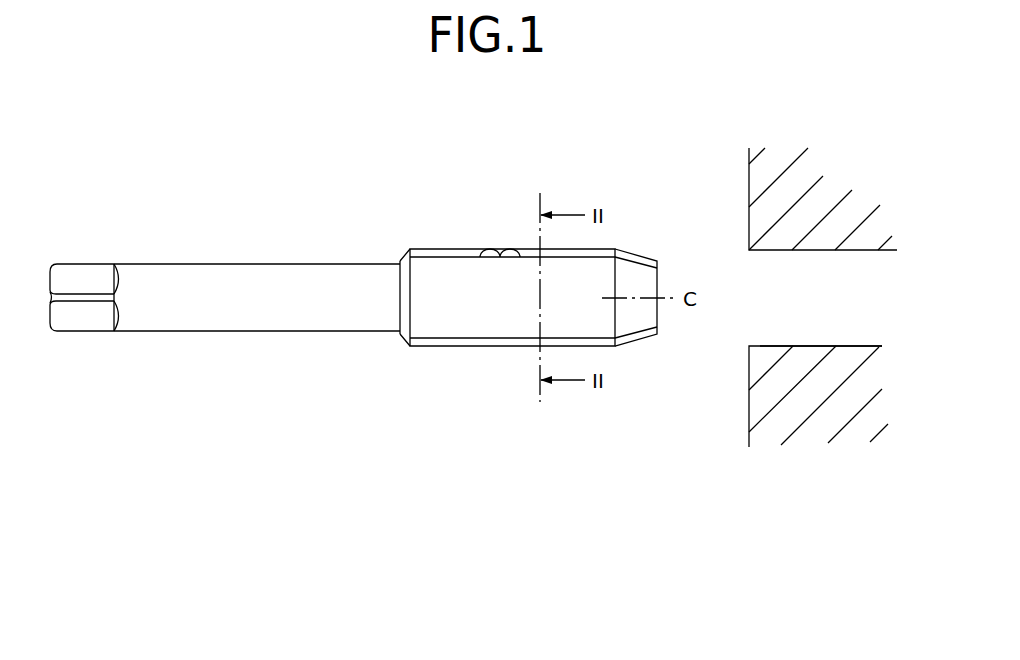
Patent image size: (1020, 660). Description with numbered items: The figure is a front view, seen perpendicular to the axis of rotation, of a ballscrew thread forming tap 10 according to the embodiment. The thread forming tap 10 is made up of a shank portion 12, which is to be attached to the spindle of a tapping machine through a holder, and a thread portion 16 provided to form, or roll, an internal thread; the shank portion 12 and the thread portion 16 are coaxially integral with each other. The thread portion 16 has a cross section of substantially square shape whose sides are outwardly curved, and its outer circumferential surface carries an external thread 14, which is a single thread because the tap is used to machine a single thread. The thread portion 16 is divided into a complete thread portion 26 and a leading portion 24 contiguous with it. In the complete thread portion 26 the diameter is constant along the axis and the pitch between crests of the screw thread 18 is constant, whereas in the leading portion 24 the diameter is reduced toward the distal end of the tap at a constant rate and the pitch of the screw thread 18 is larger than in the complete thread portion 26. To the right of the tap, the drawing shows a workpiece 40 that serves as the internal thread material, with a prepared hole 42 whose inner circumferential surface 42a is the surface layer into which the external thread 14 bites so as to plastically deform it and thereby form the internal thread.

The thread forming tap 10 is at (197, 118).
The shank portion 12 is at (259, 322).
The external thread 14 is at (378, 187).
The thread portion 16 is at (463, 243).
The screw thread 18 is at (481, 257).
The leading portion 24 is at (633, 275).
The complete thread portion 26 is at (598, 322).
The workpiece 40 is at (768, 215).
The prepared hole 42 is at (767, 340).
The inner circumferential surface 42a is at (860, 345).